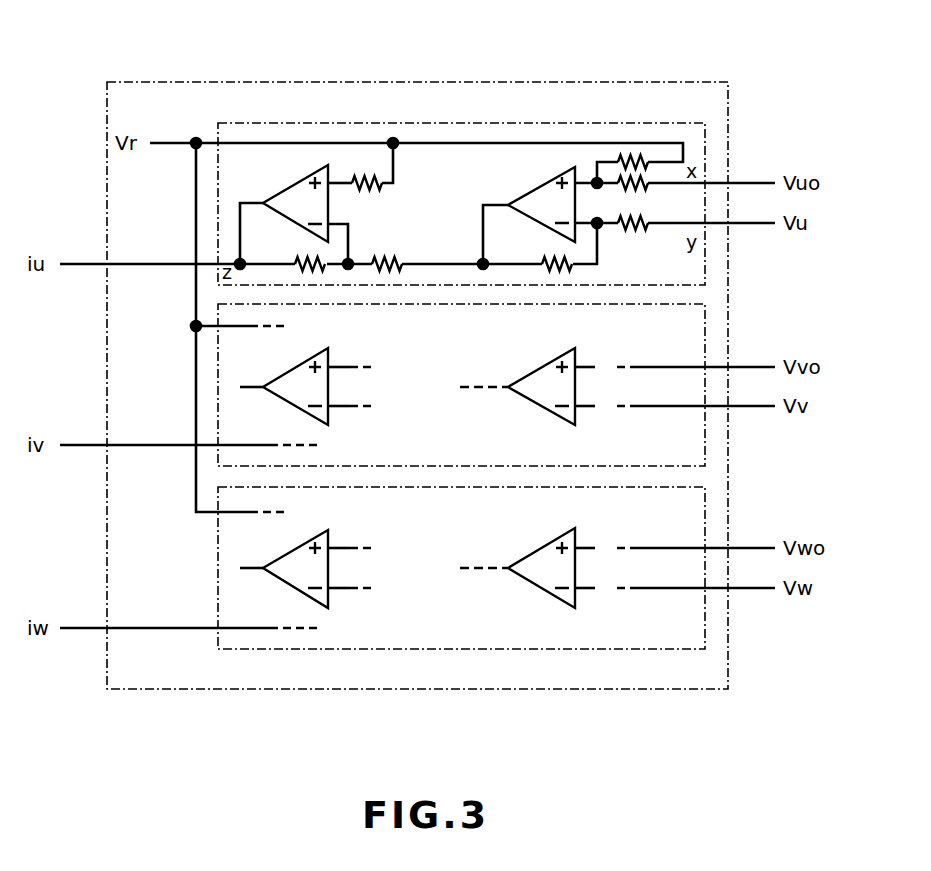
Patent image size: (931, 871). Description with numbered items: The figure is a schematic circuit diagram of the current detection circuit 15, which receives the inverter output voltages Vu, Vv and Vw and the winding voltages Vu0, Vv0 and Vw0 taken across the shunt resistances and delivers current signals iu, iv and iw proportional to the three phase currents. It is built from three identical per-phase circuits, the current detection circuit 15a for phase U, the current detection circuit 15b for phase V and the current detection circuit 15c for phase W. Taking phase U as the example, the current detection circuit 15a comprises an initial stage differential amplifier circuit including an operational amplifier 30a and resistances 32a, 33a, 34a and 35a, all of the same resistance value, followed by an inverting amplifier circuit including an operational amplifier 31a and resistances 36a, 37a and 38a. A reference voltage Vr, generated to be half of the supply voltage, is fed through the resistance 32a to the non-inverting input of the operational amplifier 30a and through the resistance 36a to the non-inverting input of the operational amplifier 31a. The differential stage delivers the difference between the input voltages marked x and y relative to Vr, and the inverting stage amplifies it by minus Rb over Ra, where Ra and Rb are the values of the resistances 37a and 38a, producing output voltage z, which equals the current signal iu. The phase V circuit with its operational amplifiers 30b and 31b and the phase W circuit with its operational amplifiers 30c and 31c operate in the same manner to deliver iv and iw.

The current detection circuit 15 is at (390, 82).
The current detection circuit of phase U 15a is at (468, 123).
The current detection circuit of phase V 15b is at (450, 304).
The current detection circuit of phase W 15c is at (414, 649).
The operational amplifier 30a is at (532, 192).
The operational amplifier 30b is at (540, 368).
The operational amplifier 30c is at (550, 547).
The operational amplifier 31a is at (296, 185).
The operational amplifier 31b is at (293, 369).
The operational amplifier 31c is at (300, 549).
The resistance 32a is at (622, 156).
The resistance 33a is at (640, 191).
The resistance 34a is at (640, 232).
The resistance 35a is at (556, 258).
The resistance 36a is at (376, 191).
The resistance 37a is at (404, 258).
The resistance 38a is at (302, 256).